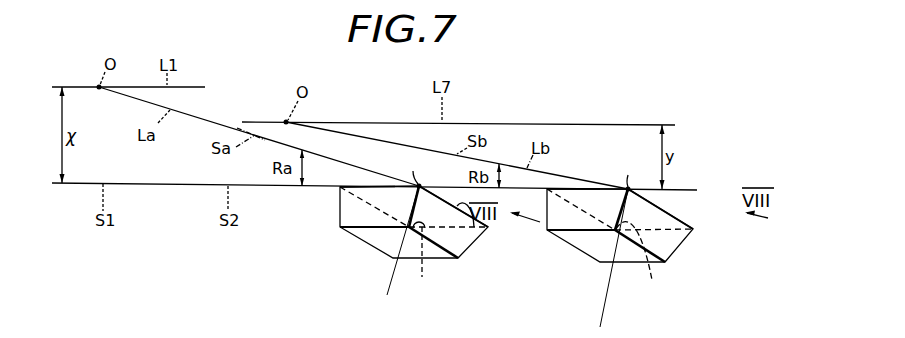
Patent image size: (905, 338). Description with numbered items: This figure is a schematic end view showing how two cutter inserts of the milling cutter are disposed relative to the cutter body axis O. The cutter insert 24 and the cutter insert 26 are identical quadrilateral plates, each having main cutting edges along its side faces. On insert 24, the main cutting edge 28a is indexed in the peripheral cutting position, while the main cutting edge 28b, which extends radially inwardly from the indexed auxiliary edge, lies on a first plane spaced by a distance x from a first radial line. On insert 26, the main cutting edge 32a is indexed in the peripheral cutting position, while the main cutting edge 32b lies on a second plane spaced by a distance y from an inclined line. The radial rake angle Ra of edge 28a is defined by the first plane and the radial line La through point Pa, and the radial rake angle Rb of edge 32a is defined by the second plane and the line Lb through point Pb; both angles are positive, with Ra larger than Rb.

The cutter insert 24 is at (376, 238).
The cutter insert 26 is at (583, 243).
The main cutting edge 28a is at (474, 228).
The main cutting edge 28b is at (375, 186).
The main cutting edge 32a is at (673, 212).
The main cutting edge 32b is at (578, 188).